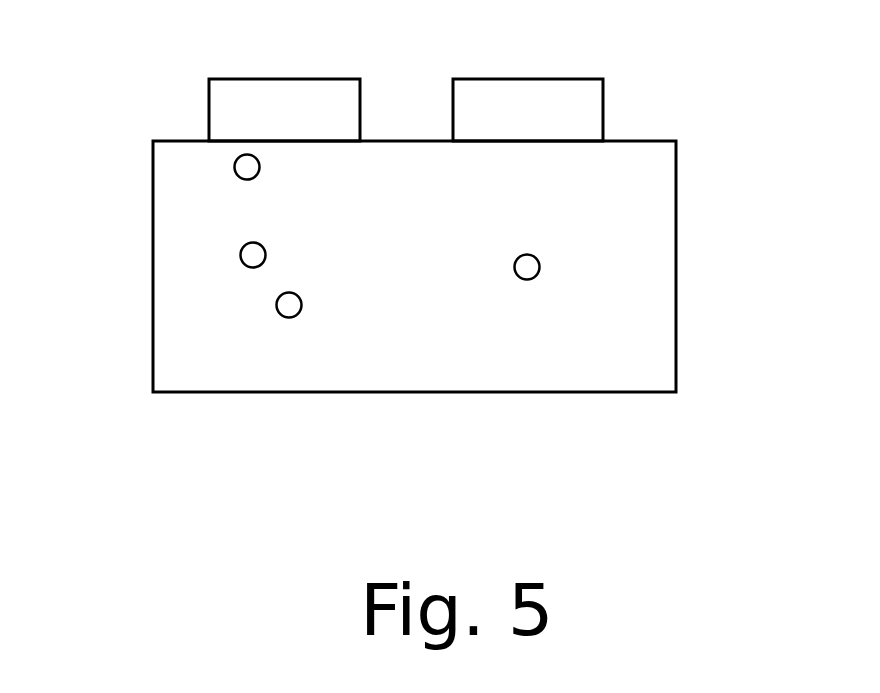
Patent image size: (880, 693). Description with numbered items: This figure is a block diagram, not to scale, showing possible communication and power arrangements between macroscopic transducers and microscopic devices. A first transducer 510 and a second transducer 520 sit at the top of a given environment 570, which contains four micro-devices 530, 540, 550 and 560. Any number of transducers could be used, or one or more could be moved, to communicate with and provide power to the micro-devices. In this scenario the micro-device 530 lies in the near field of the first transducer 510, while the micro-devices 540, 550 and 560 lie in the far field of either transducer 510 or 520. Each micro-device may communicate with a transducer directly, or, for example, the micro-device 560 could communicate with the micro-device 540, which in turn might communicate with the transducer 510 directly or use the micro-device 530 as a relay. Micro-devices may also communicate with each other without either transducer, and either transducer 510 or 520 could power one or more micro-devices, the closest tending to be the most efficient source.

The first transducer 510 is at (297, 93).
The second transducer 520 is at (502, 93).
The micro-device 530 is at (247, 167).
The micro-device 540 is at (247, 250).
The micro-device 550 is at (527, 267).
The micro-device 560 is at (289, 305).
The environment 570 is at (358, 368).